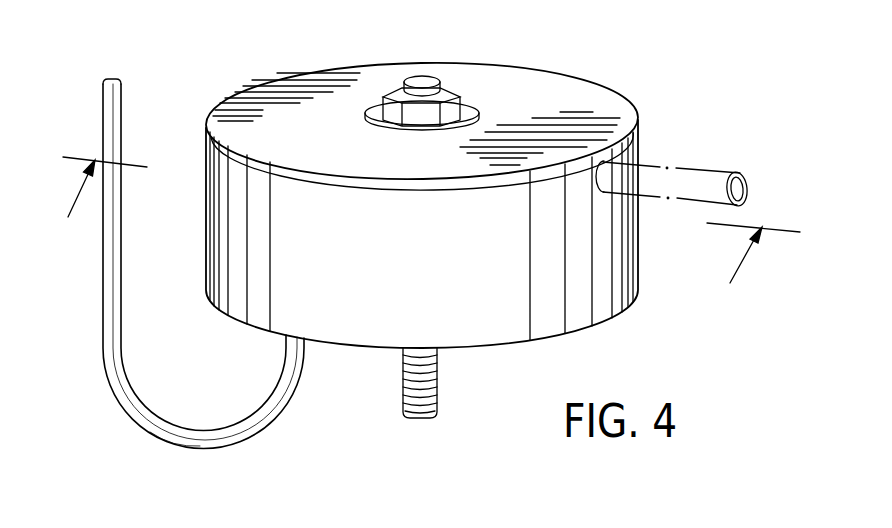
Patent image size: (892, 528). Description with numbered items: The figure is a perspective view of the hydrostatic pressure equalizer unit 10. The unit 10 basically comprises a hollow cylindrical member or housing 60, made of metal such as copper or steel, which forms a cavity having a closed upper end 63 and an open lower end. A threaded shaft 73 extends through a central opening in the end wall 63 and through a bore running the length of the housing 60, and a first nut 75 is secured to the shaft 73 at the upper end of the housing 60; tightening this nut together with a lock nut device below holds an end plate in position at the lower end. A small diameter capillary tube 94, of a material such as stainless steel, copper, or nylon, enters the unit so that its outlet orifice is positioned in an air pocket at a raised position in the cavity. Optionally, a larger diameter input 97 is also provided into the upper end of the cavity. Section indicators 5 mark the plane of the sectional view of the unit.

The hydrostatic pressure equalizer unit 10 is at (624, 76).
The section line 5 is at (426, 238).
The housing 60 is at (237, 312).
The closed upper end 63 is at (532, 82).
The threaded shaft 73 is at (402, 392).
The first nut 75 is at (382, 93).
The capillary tube 94 is at (121, 93).
The larger diameter input 97 is at (697, 163).